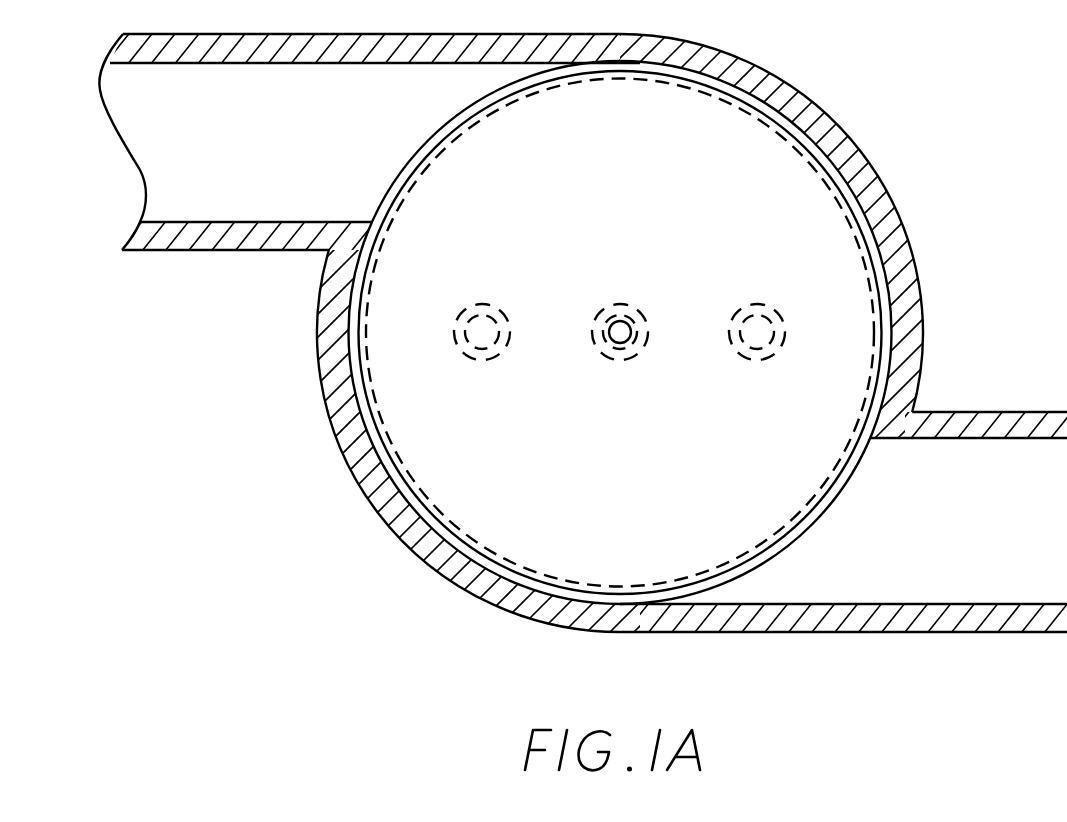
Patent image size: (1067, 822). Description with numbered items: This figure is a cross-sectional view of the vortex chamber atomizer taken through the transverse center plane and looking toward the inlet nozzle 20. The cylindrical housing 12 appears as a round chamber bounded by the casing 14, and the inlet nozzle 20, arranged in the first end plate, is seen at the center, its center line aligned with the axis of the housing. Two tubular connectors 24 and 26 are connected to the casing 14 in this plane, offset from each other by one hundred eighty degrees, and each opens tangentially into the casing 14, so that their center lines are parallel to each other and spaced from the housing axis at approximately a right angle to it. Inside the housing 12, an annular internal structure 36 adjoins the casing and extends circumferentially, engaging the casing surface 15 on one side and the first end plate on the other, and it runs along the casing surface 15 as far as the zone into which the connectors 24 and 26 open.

The cylindrical housing 12 is at (328, 454).
The casing 14 is at (921, 329).
The casing surface 15 is at (442, 528).
The inlet nozzle 20 is at (620, 332).
The tubular connector 24 is at (221, 249).
The tubular connector 26 is at (1012, 628).
The internal structure 36 is at (840, 246).